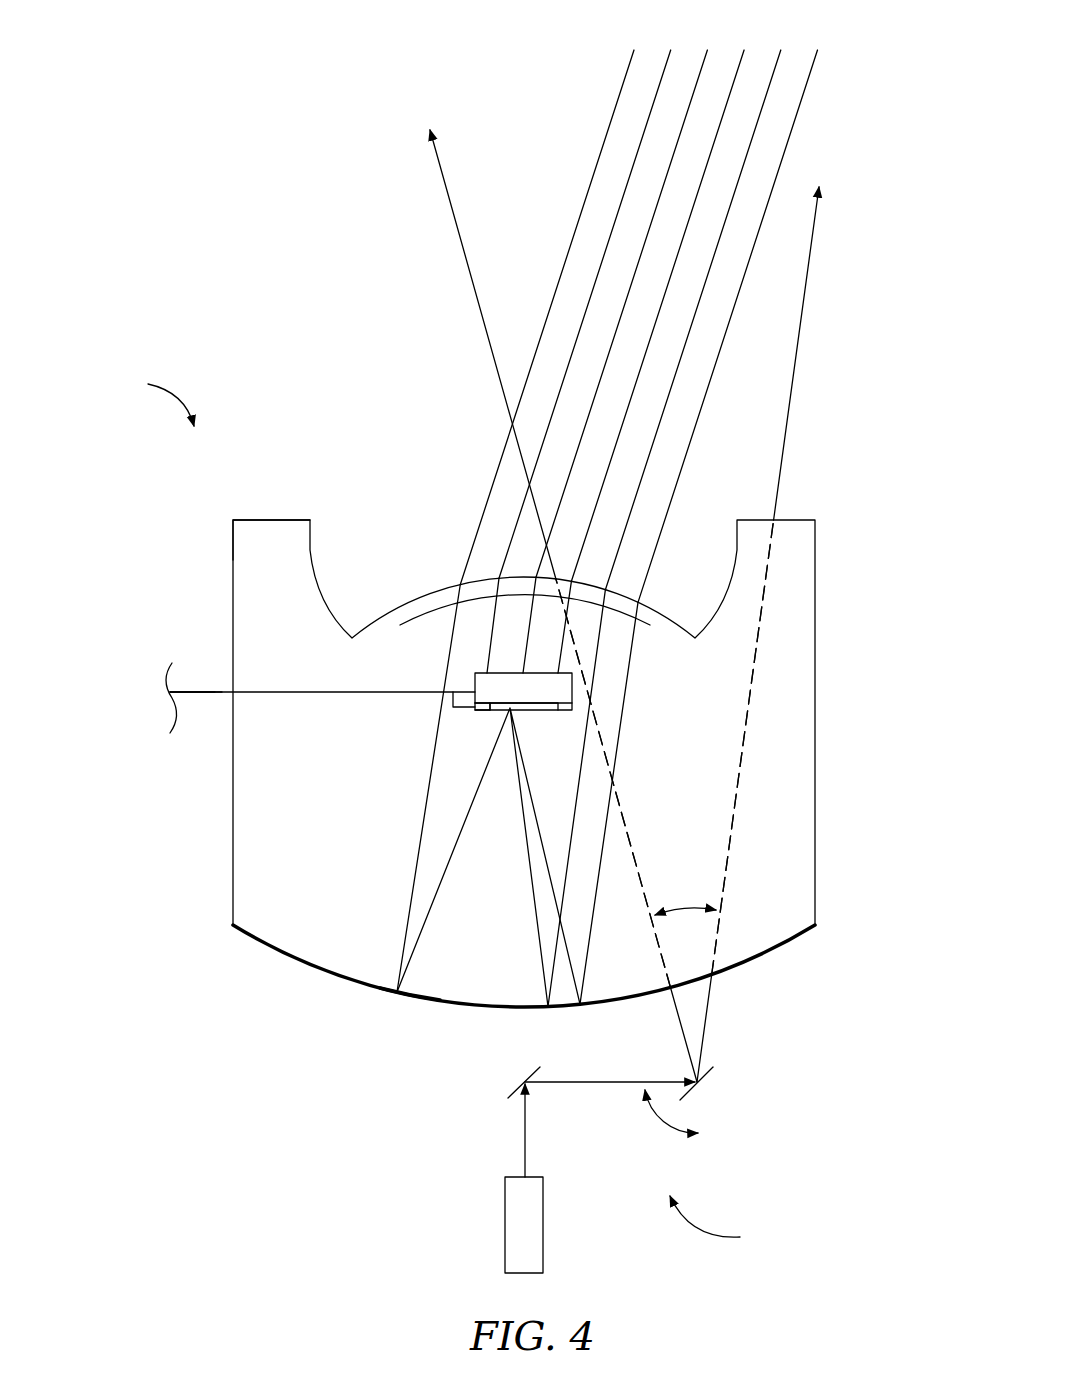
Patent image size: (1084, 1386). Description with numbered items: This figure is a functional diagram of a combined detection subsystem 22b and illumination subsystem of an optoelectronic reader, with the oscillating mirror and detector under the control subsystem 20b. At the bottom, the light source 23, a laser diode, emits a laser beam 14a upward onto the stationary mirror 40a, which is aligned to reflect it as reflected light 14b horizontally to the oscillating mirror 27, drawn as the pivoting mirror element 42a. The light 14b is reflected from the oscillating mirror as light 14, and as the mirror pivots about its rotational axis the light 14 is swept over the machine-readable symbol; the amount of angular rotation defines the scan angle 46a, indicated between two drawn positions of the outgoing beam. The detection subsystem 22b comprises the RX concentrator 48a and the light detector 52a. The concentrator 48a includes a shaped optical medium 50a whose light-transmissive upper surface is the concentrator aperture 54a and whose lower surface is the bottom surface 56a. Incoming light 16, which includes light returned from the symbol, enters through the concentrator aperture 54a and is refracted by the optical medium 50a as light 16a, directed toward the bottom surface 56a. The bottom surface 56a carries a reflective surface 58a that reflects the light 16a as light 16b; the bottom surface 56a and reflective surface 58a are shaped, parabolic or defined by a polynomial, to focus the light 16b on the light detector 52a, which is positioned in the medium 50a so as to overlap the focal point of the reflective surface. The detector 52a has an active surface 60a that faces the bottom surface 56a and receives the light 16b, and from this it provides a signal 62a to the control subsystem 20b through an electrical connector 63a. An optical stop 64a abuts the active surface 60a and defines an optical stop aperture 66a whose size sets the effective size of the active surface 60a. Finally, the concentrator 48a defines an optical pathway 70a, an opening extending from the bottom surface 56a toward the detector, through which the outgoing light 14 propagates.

The light 14 is at (458, 237).
The laser beam 14a is at (524, 1127).
The reflected light 14b is at (576, 1082).
The incoming light 16 is at (663, 78).
The refracted light 16a is at (527, 622).
The reflected light 16b is at (547, 838).
The control subsystem 20b is at (731, 1224).
The detection subsystem 22b is at (150, 400).
The light source 23 is at (504, 1222).
The oscillating mirror 27 is at (718, 1098).
The stationary mirror 40a is at (505, 1078).
The scanning mirror 42a is at (712, 1070).
The scan angle 46a is at (682, 910).
The RX concentrator 48a is at (228, 850).
The shaped optical medium 50a is at (232, 578).
The light detector 52a is at (548, 701).
The concentrator aperture 54a is at (480, 583).
The bottom surface 56a is at (337, 982).
The reflective surface 58a is at (410, 998).
The active surface 60a is at (500, 703).
The signal 62a is at (222, 694).
The electrical connector 63a is at (212, 692).
The optical stop 64a is at (487, 712).
The optical stop aperture 66a is at (537, 712).
The optical pathway 70a is at (632, 846).